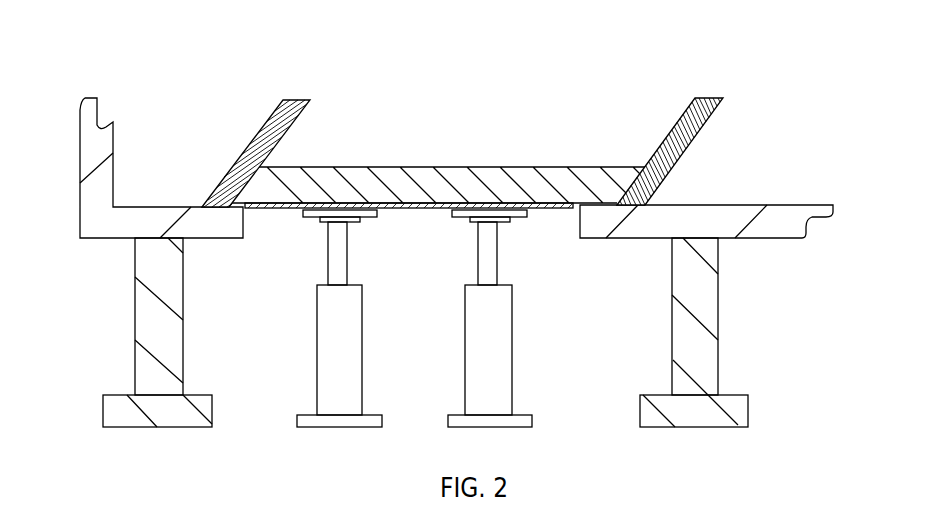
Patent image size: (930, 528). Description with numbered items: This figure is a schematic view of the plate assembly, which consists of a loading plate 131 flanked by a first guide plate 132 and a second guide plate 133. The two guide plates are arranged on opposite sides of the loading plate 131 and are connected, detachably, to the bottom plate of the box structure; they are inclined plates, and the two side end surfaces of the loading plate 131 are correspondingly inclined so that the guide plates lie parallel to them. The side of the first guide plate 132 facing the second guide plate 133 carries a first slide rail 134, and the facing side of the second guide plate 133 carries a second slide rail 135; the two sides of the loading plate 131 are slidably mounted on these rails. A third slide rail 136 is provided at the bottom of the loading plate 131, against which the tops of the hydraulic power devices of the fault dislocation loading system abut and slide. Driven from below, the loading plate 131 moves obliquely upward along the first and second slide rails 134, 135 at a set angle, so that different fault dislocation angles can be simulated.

The loading plate 131 is at (470, 187).
The first guide plate 132 is at (252, 153).
The second guide plate 133 is at (683, 148).
The first slide rail 134 is at (280, 143).
The second slide rail 135 is at (673, 128).
The third slide rail 136 is at (407, 205).